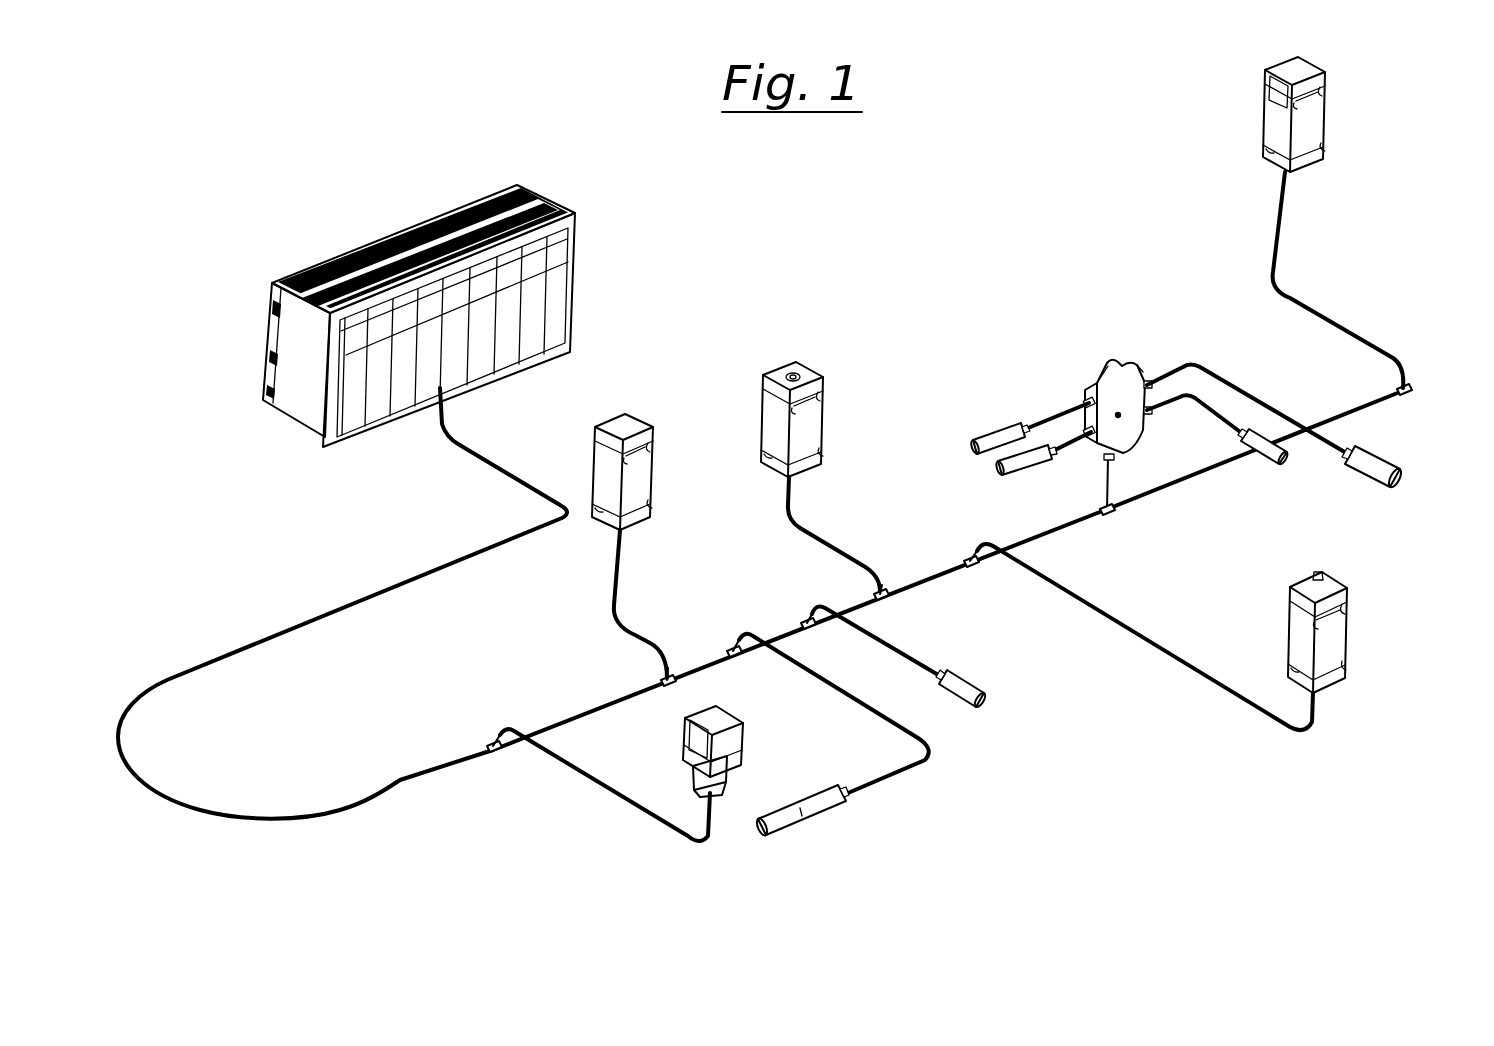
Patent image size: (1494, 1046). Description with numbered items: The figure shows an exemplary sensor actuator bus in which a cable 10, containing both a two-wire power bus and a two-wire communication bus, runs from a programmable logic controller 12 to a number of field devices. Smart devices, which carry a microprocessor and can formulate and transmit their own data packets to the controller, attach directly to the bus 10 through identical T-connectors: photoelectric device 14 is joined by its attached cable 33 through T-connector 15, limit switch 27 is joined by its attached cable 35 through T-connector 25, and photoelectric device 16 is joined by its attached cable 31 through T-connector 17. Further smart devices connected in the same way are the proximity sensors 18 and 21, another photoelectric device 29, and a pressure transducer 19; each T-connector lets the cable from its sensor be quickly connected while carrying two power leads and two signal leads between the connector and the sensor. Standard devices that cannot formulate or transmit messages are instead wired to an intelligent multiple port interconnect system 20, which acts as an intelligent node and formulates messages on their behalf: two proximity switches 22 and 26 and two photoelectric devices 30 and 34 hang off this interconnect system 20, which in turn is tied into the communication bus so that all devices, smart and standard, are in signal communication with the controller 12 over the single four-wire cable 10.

The cable 10 is at (228, 813).
The programmable logic controller 12 is at (438, 394).
The photoelectric device 14 is at (741, 740).
The T-connector 15 is at (494, 760).
The photoelectric device 16 is at (985, 700).
The T-connector 17 is at (803, 621).
The proximity sensor 18 is at (777, 374).
The pressure transducer 19 is at (1345, 586).
The intelligent multiple port interconnect system 20 is at (1150, 380).
The proximity sensor 21 is at (810, 820).
The proximity switch 22 is at (1287, 463).
The T-connector 25 is at (660, 680).
The proximity switch 26 is at (1400, 464).
The limit switch 27 is at (622, 425).
The photoelectric device 29 is at (1262, 128).
The photoelectric device 30 is at (993, 435).
The cable 31 is at (902, 650).
The cable 33 is at (660, 828).
The photoelectric device 34 is at (998, 478).
The cable 35 is at (612, 578).